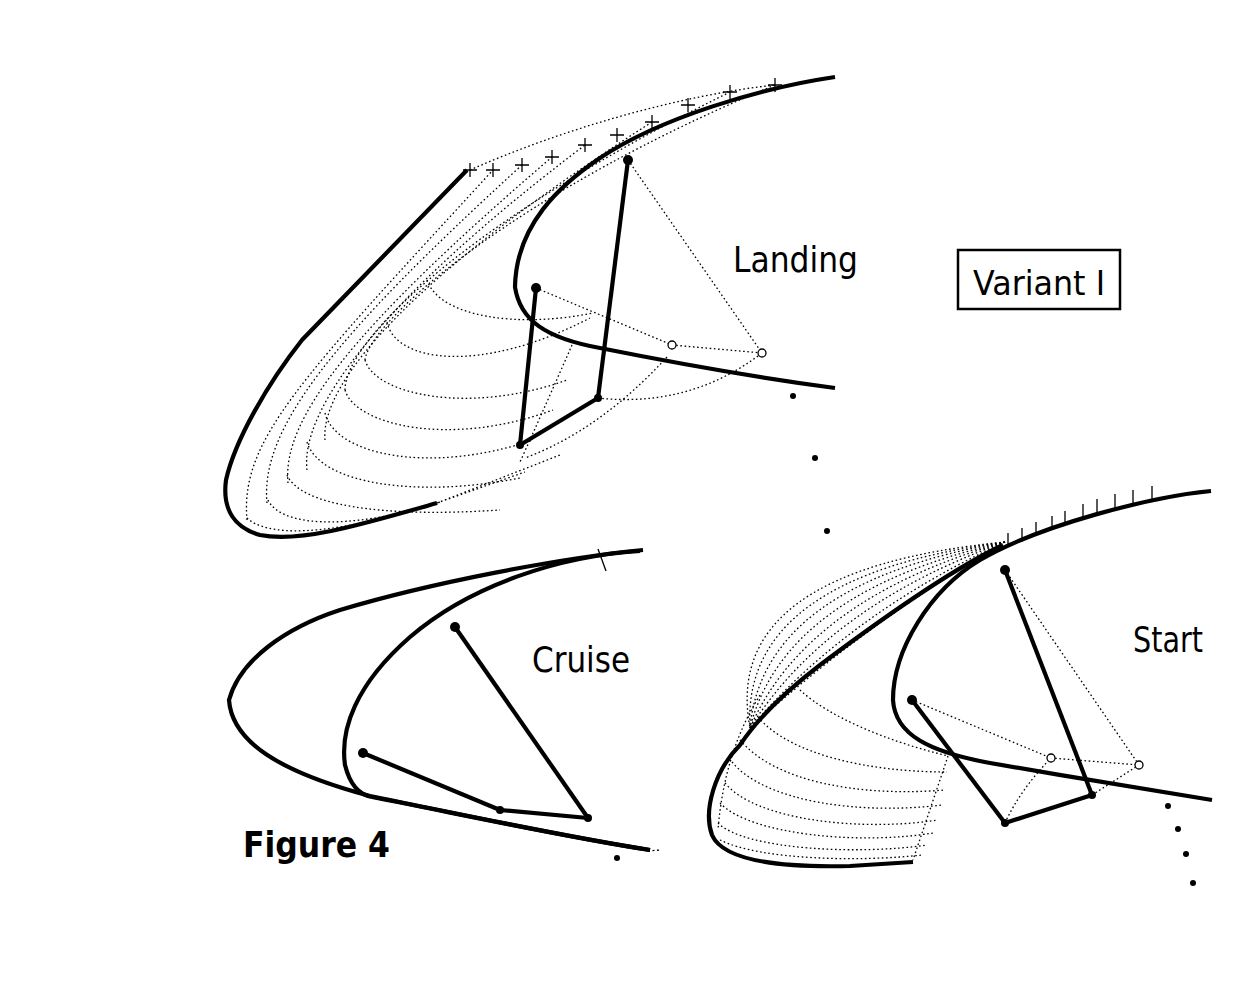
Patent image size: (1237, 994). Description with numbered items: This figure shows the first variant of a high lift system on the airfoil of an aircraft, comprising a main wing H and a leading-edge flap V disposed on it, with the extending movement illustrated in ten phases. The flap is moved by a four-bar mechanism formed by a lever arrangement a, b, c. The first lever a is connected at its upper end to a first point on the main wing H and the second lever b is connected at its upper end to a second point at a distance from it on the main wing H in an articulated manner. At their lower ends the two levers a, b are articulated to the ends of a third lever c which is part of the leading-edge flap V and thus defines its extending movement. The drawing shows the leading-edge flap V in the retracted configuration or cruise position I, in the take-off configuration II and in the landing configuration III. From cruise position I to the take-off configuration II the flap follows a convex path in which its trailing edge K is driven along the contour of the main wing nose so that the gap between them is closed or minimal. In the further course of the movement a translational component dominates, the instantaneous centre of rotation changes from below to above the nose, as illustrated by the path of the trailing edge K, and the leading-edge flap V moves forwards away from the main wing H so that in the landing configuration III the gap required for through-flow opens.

The trailing edge K is at (466, 168).
The main wing H is at (740, 187).
The leading-edge flap V is at (302, 345).
The cruise position I is at (439, 797).
The take-off configuration II is at (861, 701).
The landing configuration III is at (510, 308).
The first lever a is at (681, 553).
The second lever b is at (796, 489).
The third lever c is at (796, 624).